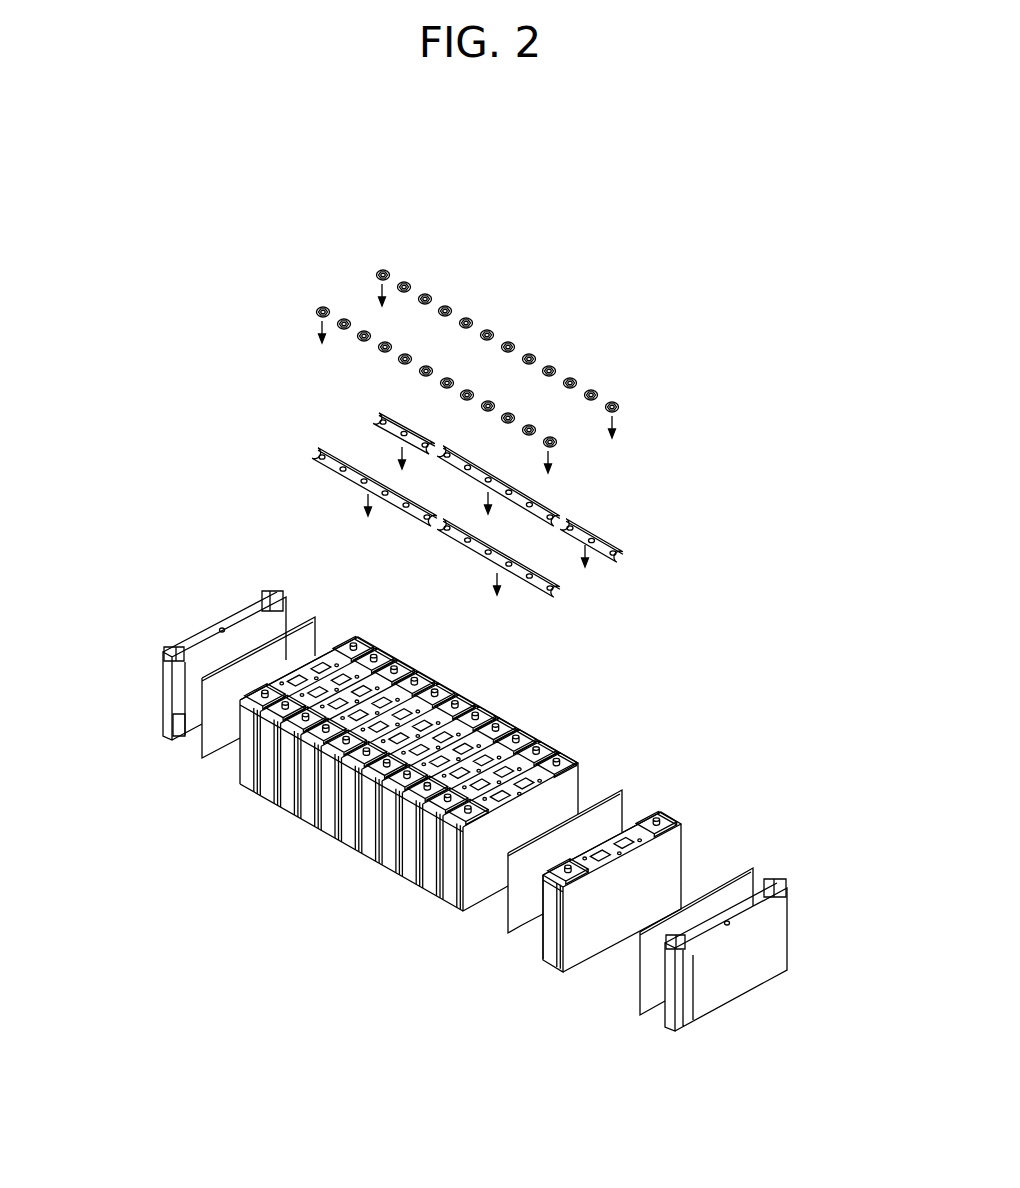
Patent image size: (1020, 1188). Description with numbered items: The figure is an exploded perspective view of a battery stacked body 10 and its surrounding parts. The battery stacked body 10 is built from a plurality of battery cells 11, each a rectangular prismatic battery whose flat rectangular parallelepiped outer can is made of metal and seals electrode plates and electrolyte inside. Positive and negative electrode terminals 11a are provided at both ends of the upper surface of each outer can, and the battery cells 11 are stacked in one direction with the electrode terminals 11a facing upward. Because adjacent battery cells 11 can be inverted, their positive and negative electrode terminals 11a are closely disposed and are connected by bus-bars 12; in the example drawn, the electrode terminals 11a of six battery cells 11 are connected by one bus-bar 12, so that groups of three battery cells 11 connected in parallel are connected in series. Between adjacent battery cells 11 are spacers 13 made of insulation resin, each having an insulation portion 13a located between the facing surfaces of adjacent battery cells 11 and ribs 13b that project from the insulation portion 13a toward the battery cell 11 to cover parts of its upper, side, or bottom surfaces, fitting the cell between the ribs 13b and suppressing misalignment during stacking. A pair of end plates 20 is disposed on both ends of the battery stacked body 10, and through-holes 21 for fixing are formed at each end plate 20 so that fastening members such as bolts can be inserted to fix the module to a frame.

The battery stacked body 10 is at (297, 852).
The battery cell 11 is at (680, 792).
The electrode terminal 11a is at (275, 682).
The bus-bar 12 is at (338, 452).
The spacer 13 is at (444, 807).
The insulation portion 13a is at (508, 907).
The rib 13b is at (620, 790).
The end plate 20 is at (167, 688).
The through-hole 21 is at (267, 574).